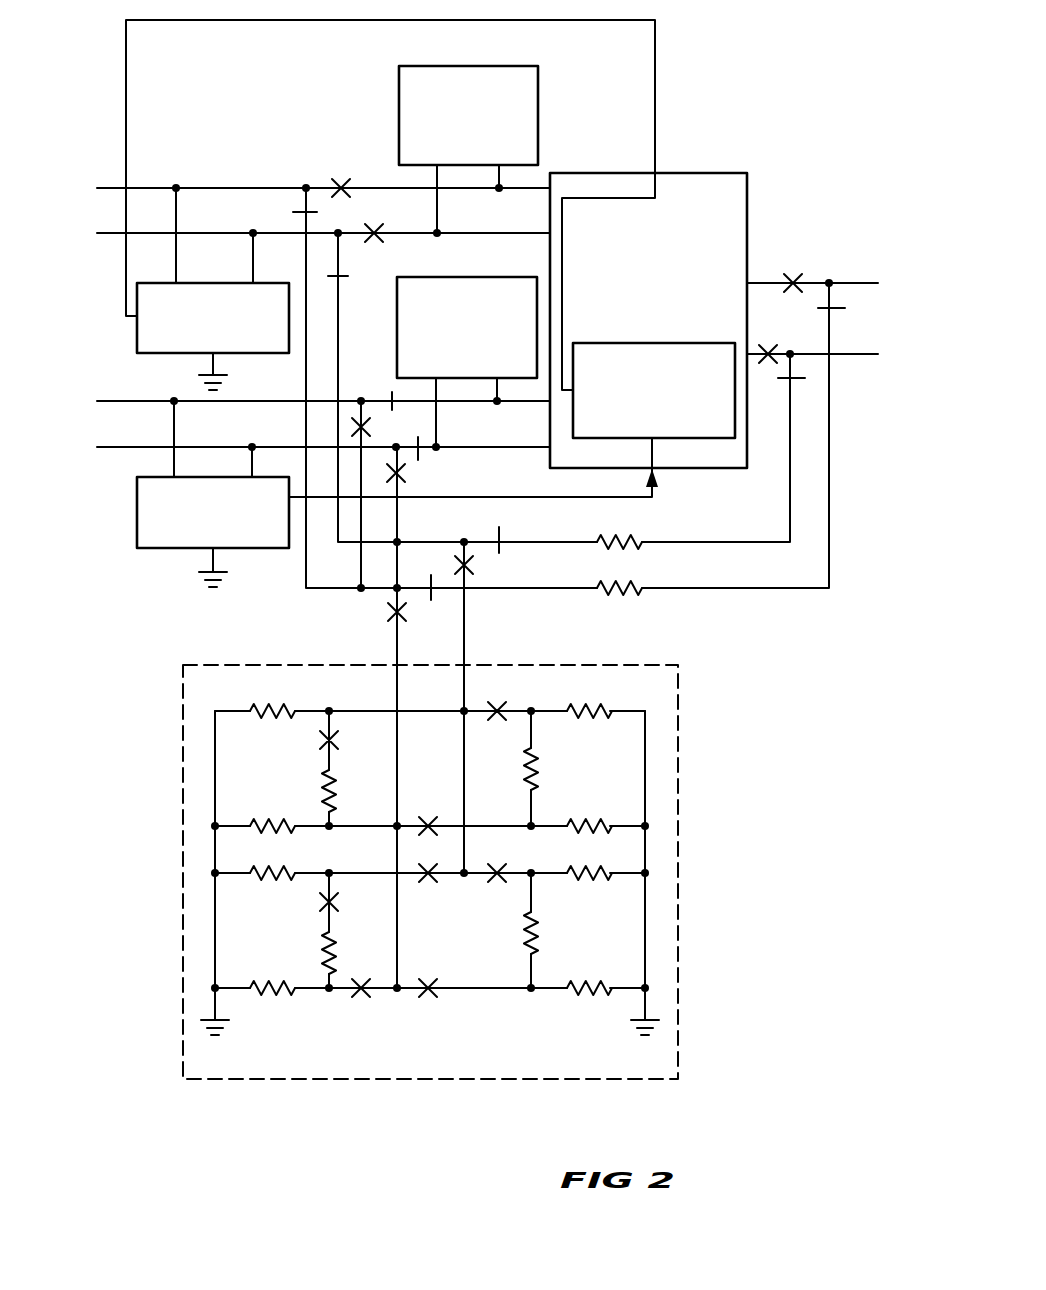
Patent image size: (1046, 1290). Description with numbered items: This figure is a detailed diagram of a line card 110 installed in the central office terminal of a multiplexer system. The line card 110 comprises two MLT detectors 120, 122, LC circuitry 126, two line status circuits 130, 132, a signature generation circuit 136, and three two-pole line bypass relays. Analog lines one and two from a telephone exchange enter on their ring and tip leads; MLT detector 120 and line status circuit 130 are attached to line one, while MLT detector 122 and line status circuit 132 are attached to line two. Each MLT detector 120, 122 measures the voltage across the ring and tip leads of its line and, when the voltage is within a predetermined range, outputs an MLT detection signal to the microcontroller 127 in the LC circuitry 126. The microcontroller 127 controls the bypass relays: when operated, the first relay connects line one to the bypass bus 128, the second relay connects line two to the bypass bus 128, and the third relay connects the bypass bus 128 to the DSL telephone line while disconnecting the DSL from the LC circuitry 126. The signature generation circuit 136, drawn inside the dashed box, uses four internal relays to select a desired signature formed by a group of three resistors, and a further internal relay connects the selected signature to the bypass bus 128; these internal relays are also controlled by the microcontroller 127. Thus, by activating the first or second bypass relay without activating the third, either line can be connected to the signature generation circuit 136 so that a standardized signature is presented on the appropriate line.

The line card 110 is at (847, 144).
The MLT detector 120 is at (241, 353).
The MLT detector 122 is at (165, 548).
The LC circuitry 126 is at (691, 173).
The microcontroller 127 is at (633, 343).
The bypass bus 128 is at (358, 556).
The line status circuit 130 is at (399, 92).
The line status circuit 132 is at (444, 277).
The signature generation circuit 136 is at (678, 730).